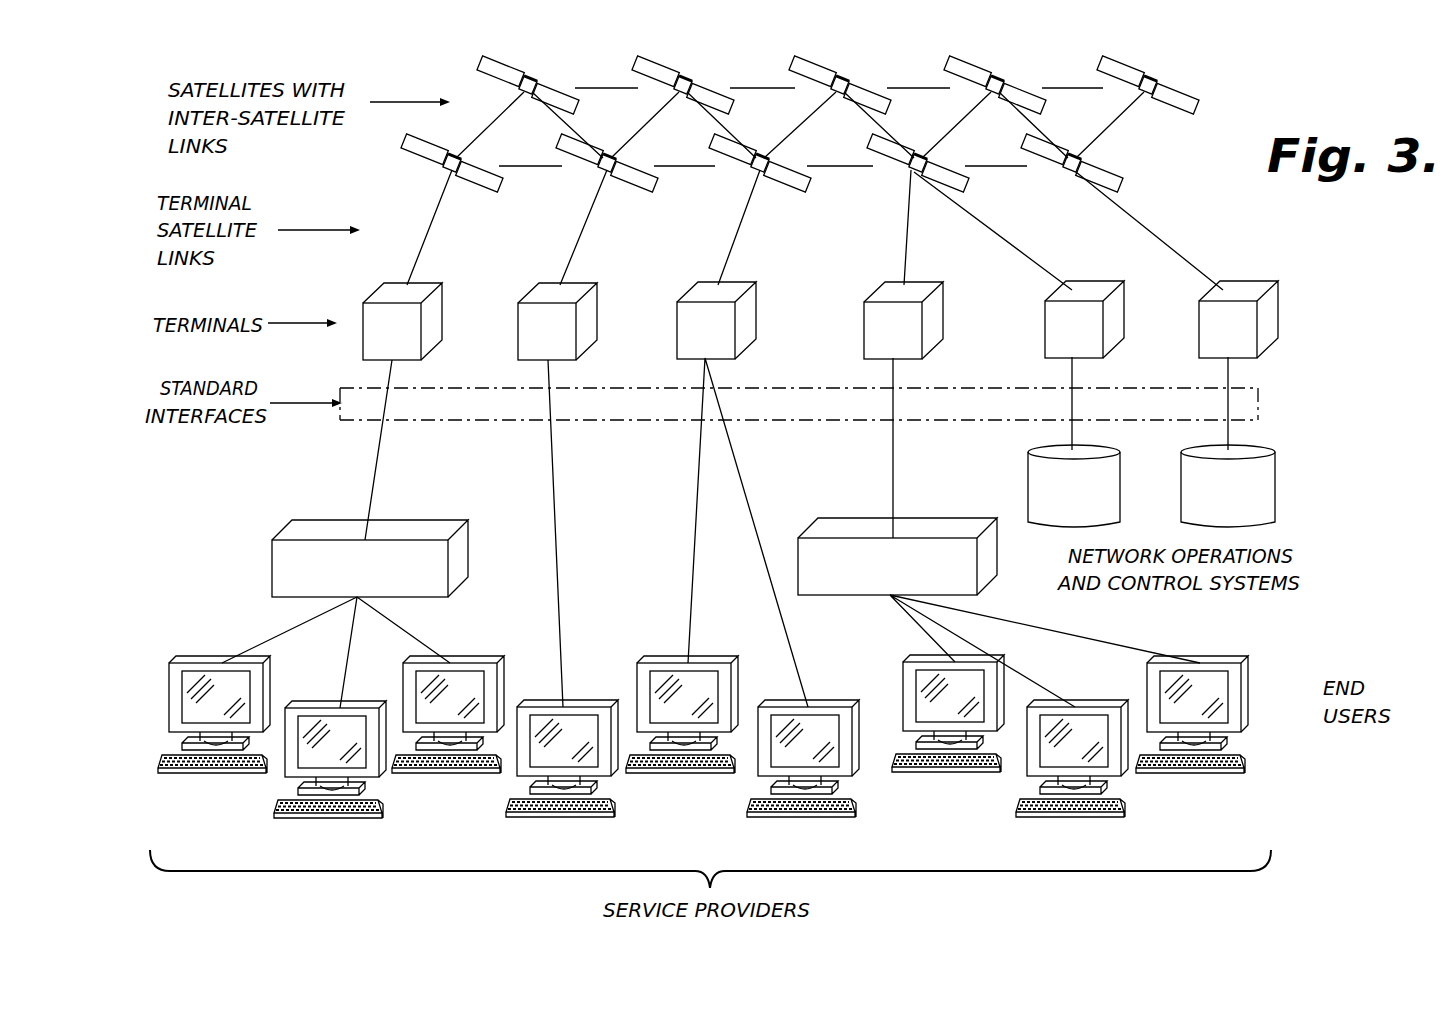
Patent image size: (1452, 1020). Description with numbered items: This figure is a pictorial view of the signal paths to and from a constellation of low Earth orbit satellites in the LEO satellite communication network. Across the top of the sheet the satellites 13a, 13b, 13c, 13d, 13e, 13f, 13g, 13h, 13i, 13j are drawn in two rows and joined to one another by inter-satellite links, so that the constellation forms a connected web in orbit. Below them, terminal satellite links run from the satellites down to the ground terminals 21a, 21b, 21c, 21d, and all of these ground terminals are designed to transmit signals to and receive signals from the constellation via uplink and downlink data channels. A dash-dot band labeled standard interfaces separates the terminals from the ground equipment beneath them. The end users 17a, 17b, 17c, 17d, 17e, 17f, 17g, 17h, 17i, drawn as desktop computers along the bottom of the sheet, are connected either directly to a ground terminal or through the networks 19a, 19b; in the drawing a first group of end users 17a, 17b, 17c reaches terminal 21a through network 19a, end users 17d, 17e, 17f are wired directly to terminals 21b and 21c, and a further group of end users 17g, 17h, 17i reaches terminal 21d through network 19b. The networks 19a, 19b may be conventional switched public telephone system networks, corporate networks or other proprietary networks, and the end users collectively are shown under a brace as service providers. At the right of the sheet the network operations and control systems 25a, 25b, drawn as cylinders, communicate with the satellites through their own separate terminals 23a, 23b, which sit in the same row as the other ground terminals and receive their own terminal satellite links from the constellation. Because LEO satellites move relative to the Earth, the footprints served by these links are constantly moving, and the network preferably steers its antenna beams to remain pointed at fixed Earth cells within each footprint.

The satellite with inter-satellite links 13a is at (530, 97).
The satellite with inter-satellite links 13b is at (685, 97).
The satellite with inter-satellite links 13c is at (842, 97).
The satellite with inter-satellite links 13d is at (997, 97).
The satellite with inter-satellite links 13e is at (1150, 97).
The satellite with inter-satellite links 13f is at (454, 175).
The satellite with inter-satellite links 13g is at (609, 175).
The satellite with inter-satellite links 13h is at (762, 175).
The satellite with inter-satellite links 13i is at (965, 178).
The satellite with inter-satellite links 13j is at (1119, 178).
The end user 17a is at (228, 662).
The end user 17b is at (306, 707).
The end user 17c is at (480, 662).
The end user 17d is at (598, 706).
The end user 17e is at (730, 662).
The end user 17f is at (848, 706).
The end user 17g is at (906, 661).
The end user 17h is at (1086, 706).
The end user 17i is at (1240, 662).
The network 19a is at (410, 524).
The network 19b is at (828, 524).
The ground terminal 21a is at (388, 290).
The ground terminal 21b is at (532, 290).
The ground terminal 21c is at (690, 290).
The ground terminal 21d is at (878, 290).
The terminal 23a is at (1118, 300).
The terminal 23b is at (1268, 320).
The network operations and control system 25a is at (1028, 486).
The network operations and control system 25b is at (1268, 482).